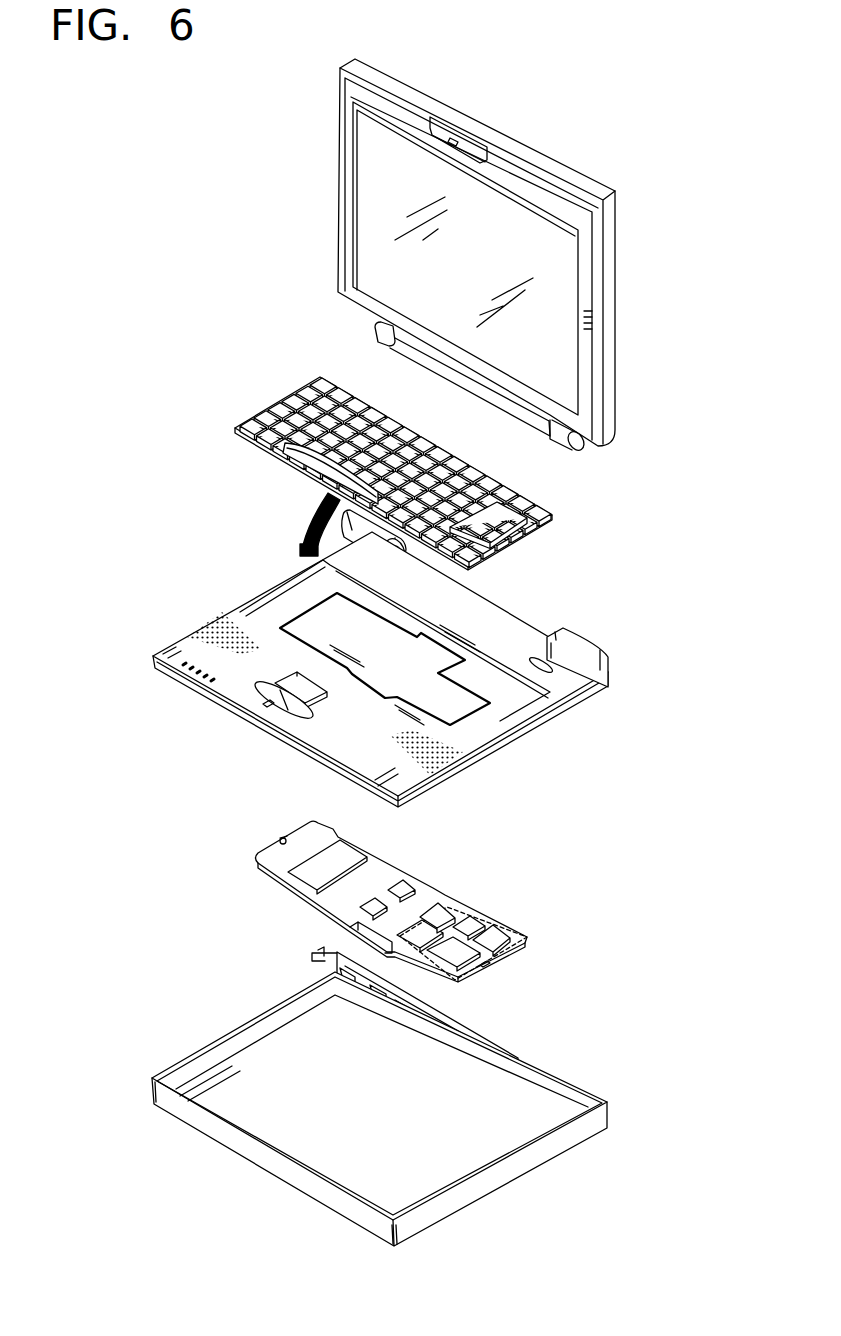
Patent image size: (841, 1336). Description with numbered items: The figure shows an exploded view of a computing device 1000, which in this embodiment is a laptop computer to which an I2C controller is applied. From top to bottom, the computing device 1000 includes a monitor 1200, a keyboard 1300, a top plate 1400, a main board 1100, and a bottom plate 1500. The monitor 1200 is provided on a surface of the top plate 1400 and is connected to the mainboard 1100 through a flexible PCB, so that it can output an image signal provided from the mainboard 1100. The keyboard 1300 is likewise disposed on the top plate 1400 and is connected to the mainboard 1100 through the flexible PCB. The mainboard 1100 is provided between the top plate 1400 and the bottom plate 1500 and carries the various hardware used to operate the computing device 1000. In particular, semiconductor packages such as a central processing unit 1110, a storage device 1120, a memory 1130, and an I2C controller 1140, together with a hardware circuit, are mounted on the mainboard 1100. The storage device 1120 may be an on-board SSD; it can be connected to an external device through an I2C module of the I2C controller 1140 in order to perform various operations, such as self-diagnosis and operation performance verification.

The computing device 1000 is at (652, 54).
The main board 1100 is at (402, 944).
The central processing unit (CPU) 1110 is at (443, 908).
The storage device 1120 is at (510, 935).
The memory 1130 is at (470, 923).
The I2C controller 1140 is at (403, 887).
The monitor 1200 is at (608, 340).
The keyboard 1300 is at (557, 510).
The top plate 1400 is at (605, 672).
The bottom plate 1500 is at (607, 1117).